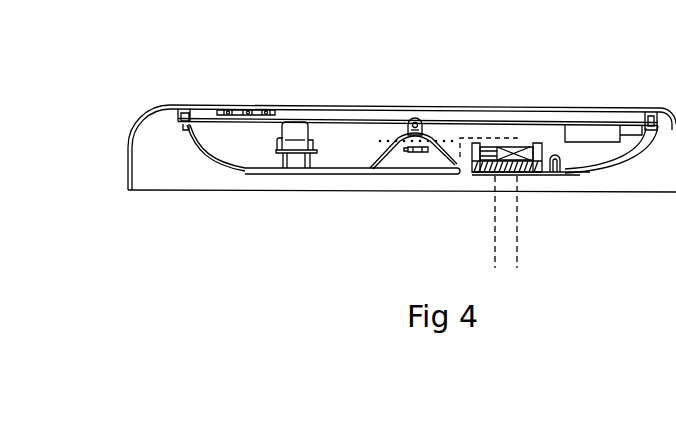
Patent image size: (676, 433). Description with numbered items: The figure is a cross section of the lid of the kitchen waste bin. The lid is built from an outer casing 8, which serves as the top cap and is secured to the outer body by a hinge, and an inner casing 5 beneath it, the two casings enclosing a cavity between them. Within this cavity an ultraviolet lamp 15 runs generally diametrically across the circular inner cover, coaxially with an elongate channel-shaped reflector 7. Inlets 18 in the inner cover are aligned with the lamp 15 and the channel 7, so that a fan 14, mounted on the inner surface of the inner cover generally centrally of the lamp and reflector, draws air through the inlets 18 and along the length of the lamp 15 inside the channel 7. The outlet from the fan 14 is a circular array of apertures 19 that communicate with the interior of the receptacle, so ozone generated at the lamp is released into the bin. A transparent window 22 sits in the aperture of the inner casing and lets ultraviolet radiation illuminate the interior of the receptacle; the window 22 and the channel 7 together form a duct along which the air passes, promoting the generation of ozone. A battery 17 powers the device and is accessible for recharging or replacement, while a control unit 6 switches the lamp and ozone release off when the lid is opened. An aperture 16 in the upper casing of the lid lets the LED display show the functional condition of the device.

The inner casing 5 is at (217, 165).
The control unit 6 is at (295, 132).
The channel-shaped reflector 7 is at (378, 160).
The outer casing 8 is at (135, 133).
The fan 14 is at (538, 194).
The ultraviolet lamp 15 is at (410, 152).
The aperture 16 is at (257, 110).
The battery 17 is at (588, 135).
The inlets 18 is at (445, 135).
The apertures 19 is at (519, 173).
The transparent window 22 is at (452, 175).